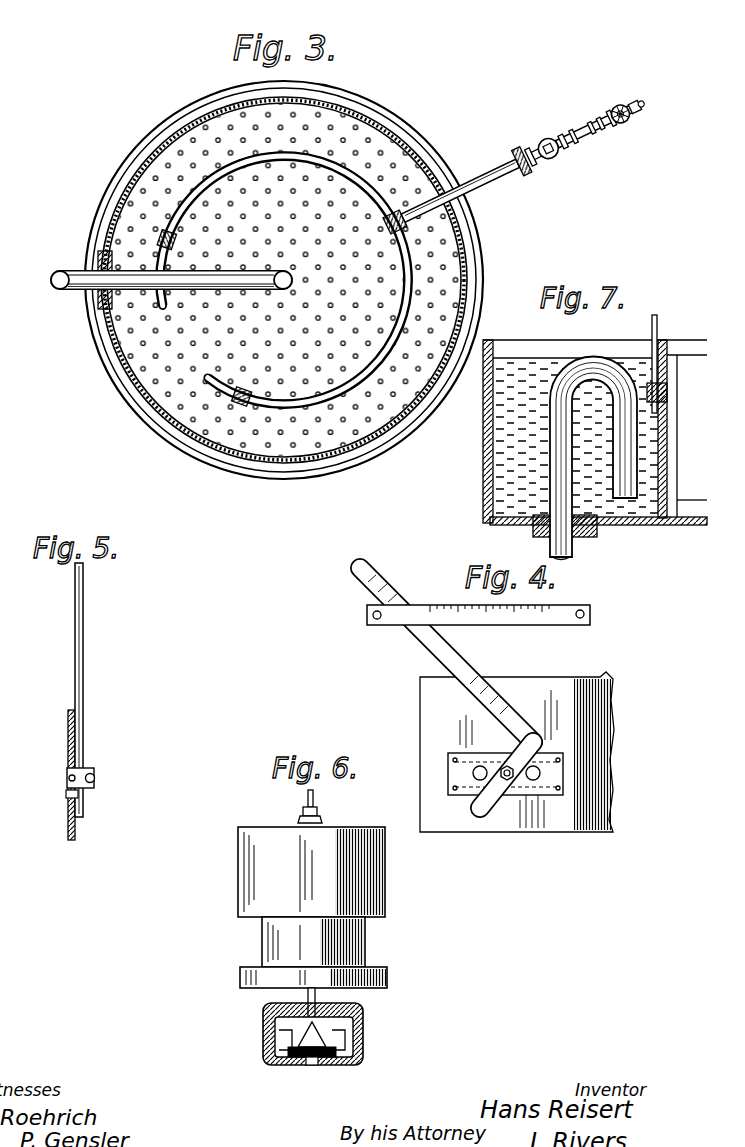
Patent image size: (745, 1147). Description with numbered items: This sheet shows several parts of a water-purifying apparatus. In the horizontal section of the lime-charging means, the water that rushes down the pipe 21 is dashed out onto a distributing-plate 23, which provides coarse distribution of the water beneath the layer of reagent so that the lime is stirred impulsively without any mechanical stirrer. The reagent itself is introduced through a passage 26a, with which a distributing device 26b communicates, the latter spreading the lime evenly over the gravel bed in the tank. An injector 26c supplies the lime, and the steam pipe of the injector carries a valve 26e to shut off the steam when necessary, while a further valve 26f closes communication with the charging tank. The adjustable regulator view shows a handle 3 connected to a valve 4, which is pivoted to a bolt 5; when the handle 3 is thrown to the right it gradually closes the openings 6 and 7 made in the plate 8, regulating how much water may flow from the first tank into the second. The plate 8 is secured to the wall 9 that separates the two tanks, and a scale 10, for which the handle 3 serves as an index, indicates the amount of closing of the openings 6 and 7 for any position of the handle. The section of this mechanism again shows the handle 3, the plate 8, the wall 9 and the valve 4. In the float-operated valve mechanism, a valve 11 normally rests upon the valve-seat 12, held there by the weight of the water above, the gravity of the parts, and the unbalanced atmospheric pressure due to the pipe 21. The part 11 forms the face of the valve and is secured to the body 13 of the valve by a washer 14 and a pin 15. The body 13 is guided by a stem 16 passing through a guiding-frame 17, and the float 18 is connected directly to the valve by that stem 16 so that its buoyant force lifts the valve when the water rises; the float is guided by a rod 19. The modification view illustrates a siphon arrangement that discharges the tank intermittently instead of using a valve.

In FIG. 3, the pipe 21 is at (60, 290).
In FIG. 3, the distributing-plate 23 is at (195, 433).
In FIG. 3, the passage 26a is at (494, 181).
In FIG. 3, the distributing device 26b is at (262, 410).
In FIG. 3, the injector 26c is at (644, 108).
In FIG. 3, the valve 26e is at (624, 122).
In FIG. 3, the valve 26f is at (551, 159).
In FIG. 4, the handle 3 is at (432, 648).
In FIG. 5, the handle 3 is at (82, 630).
In FIG. 4, the valve 4 is at (505, 782).
In FIG. 5, the valve 4 is at (86, 797).
In FIG. 4, the bolt 5 is at (522, 789).
In FIG. 4, the opening 6 is at (457, 775).
In FIG. 4, the opening 7 is at (541, 773).
In FIG. 4, the plate 8 is at (470, 755).
In FIG. 5, the plate 8 is at (84, 763).
In FIG. 5, the wall 9 is at (69, 728).
In FIG. 4, the scale 10 is at (547, 608).
In FIG. 6, the valve 11 is at (287, 1065).
In FIG. 6, the valve-seat 12 is at (337, 1058).
In FIG. 6, the body of the valve 13 is at (298, 1034).
In FIG. 6, the washer 14 is at (303, 1067).
In FIG. 6, the pin 15 is at (317, 1066).
In FIG. 6, the stem 16 is at (322, 996).
In FIG. 6, the guiding-frame 17 is at (268, 1006).
In FIG. 6, the float 18 is at (245, 879).
In FIG. 6, the rod 19 is at (305, 797).